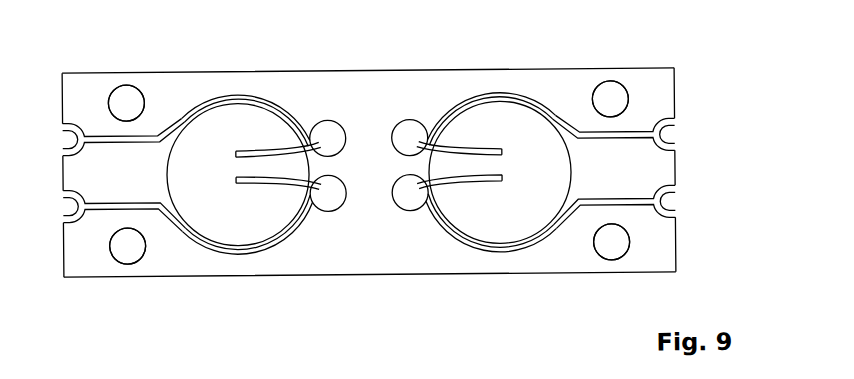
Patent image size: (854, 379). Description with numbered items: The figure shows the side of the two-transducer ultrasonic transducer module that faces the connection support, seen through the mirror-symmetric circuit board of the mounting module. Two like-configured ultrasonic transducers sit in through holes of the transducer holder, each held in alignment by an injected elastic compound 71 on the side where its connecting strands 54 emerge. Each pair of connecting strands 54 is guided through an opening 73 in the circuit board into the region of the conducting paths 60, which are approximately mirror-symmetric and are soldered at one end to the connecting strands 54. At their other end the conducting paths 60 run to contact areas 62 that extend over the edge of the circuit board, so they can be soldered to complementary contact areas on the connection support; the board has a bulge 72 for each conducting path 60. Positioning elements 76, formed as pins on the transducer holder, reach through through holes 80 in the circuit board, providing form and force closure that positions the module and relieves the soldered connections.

The connecting strands 54 is at (236, 179).
The conducting paths 60 is at (124, 176).
The contact areas 62 is at (38, 175).
The elastic compound 71 is at (263, 223).
The bulge 72 is at (57, 204).
The opening 73 is at (464, 107).
The positioning elements 76 is at (136, 101).
The through holes 80 is at (126, 100).